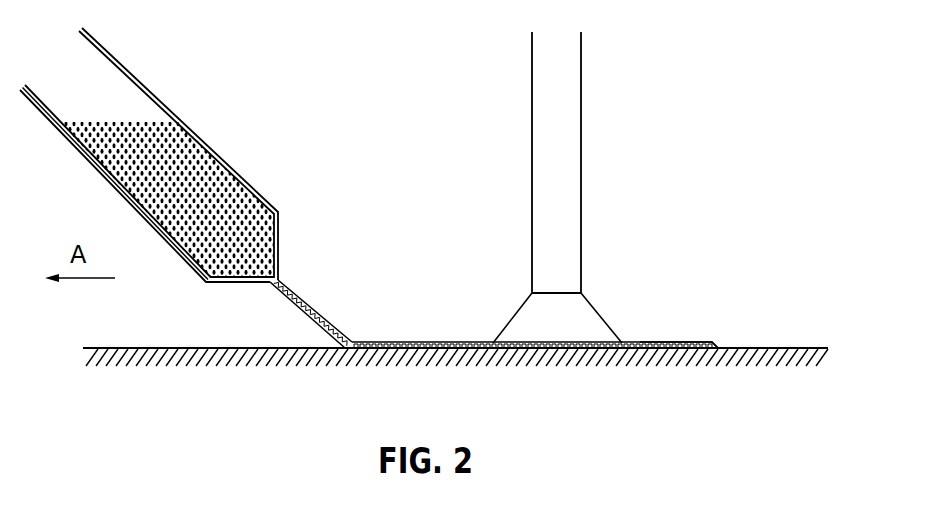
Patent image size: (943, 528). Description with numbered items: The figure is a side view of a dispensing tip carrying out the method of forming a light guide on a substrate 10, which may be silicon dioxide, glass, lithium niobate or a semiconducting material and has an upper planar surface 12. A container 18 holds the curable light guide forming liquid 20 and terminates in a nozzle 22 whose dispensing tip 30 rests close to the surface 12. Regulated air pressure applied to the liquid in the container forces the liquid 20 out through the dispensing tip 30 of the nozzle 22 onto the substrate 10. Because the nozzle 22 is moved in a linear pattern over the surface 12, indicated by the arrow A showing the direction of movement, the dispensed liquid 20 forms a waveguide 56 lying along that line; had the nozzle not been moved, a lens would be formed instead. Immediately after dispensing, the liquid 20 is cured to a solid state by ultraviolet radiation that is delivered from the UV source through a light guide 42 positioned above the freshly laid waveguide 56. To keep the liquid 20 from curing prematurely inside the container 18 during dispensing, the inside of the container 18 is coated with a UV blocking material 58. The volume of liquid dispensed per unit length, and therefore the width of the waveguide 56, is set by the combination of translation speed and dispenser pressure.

The substrate 10 is at (799, 324).
The upper planar surface 12 is at (748, 347).
The container 18 is at (207, 143).
The curable light guide forming liquid 20 is at (150, 133).
The nozzle 22 is at (297, 288).
The dispensing tip 30 is at (335, 325).
The light guide 42 is at (582, 72).
The waveguide 56 is at (667, 340).
The UV blocking material 58 is at (38, 103).